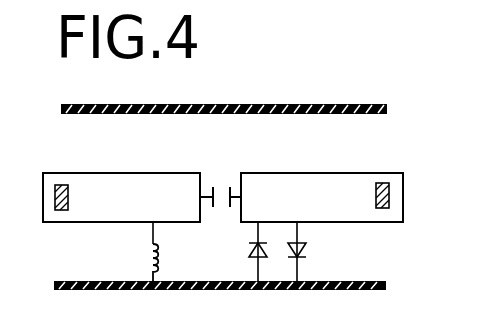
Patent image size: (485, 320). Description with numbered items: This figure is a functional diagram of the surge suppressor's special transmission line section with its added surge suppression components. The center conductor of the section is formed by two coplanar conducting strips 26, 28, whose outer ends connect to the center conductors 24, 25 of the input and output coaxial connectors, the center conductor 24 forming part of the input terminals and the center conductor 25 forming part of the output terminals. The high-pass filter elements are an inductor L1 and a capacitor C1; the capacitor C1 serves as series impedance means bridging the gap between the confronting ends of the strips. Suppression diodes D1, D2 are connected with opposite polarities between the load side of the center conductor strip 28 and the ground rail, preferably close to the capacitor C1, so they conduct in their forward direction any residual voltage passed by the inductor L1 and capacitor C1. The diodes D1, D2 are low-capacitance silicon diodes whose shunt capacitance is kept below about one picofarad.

The center conductor 24 is at (61, 185).
The center conductor 25 is at (382, 183).
The conducting strip 26 is at (289, 173).
The conducting strip 28 is at (95, 173).
The capacitor C1 is at (230, 186).
The inductor L1 is at (149, 262).
The suppression diode D1 is at (253, 257).
The suppression diode D2 is at (305, 248).